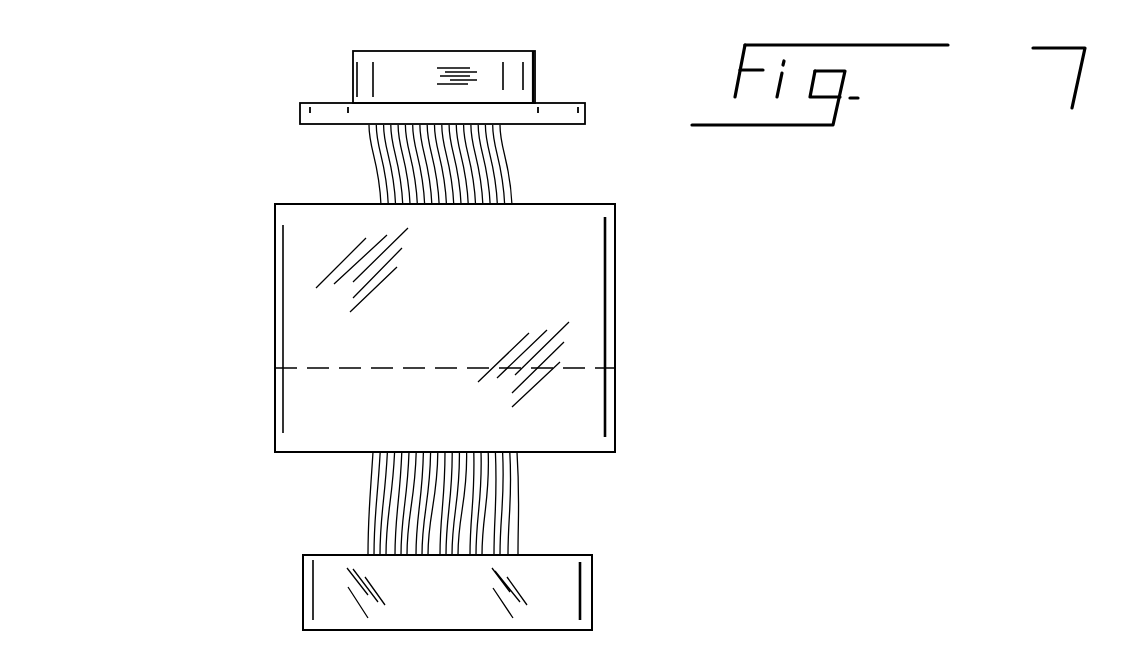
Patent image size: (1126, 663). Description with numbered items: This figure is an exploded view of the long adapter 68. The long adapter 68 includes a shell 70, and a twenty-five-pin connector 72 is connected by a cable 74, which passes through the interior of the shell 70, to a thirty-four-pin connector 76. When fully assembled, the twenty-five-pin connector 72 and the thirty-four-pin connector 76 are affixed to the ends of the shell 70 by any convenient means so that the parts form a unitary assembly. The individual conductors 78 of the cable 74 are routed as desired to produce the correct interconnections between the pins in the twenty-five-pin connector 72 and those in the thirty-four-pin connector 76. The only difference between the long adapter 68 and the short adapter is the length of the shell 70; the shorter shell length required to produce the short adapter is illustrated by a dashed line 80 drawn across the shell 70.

The long adapter 68 is at (240, 117).
The shell 70 is at (590, 288).
The 25-pin connector 72 is at (529, 83).
The cable 74 is at (503, 173).
The 34-pin connector 76 is at (572, 590).
The individual conductors 78 is at (512, 537).
The dashed line 80 is at (572, 368).